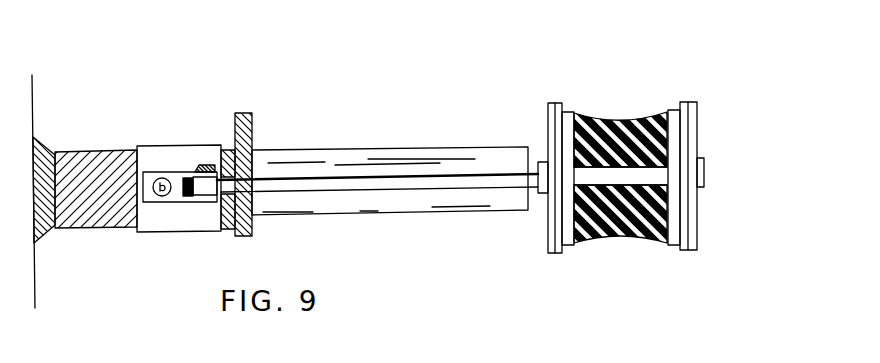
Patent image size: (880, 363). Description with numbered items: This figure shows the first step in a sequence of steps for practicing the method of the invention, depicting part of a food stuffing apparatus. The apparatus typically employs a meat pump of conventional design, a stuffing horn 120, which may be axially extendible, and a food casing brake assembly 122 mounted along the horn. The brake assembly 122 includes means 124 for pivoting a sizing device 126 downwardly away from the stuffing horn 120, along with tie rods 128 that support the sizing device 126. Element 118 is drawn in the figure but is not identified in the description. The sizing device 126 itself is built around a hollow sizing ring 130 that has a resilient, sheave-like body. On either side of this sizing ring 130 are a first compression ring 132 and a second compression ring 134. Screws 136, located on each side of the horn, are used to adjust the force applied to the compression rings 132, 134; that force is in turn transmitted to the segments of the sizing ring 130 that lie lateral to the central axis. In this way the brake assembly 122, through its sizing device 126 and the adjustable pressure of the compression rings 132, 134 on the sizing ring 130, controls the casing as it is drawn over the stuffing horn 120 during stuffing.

The mounting flange 118 is at (250, 99).
The stuffing horn 120 is at (328, 150).
The food casing brake assembly 122 is at (615, 110).
The means for pivoting 124 is at (165, 178).
The sizing device 126 is at (692, 202).
The tie rods 128 is at (423, 180).
The hollow sizing ring 130 is at (648, 110).
The first compression ring 132 is at (703, 157).
The second compression ring 134 is at (548, 235).
The screws 136 is at (637, 237).